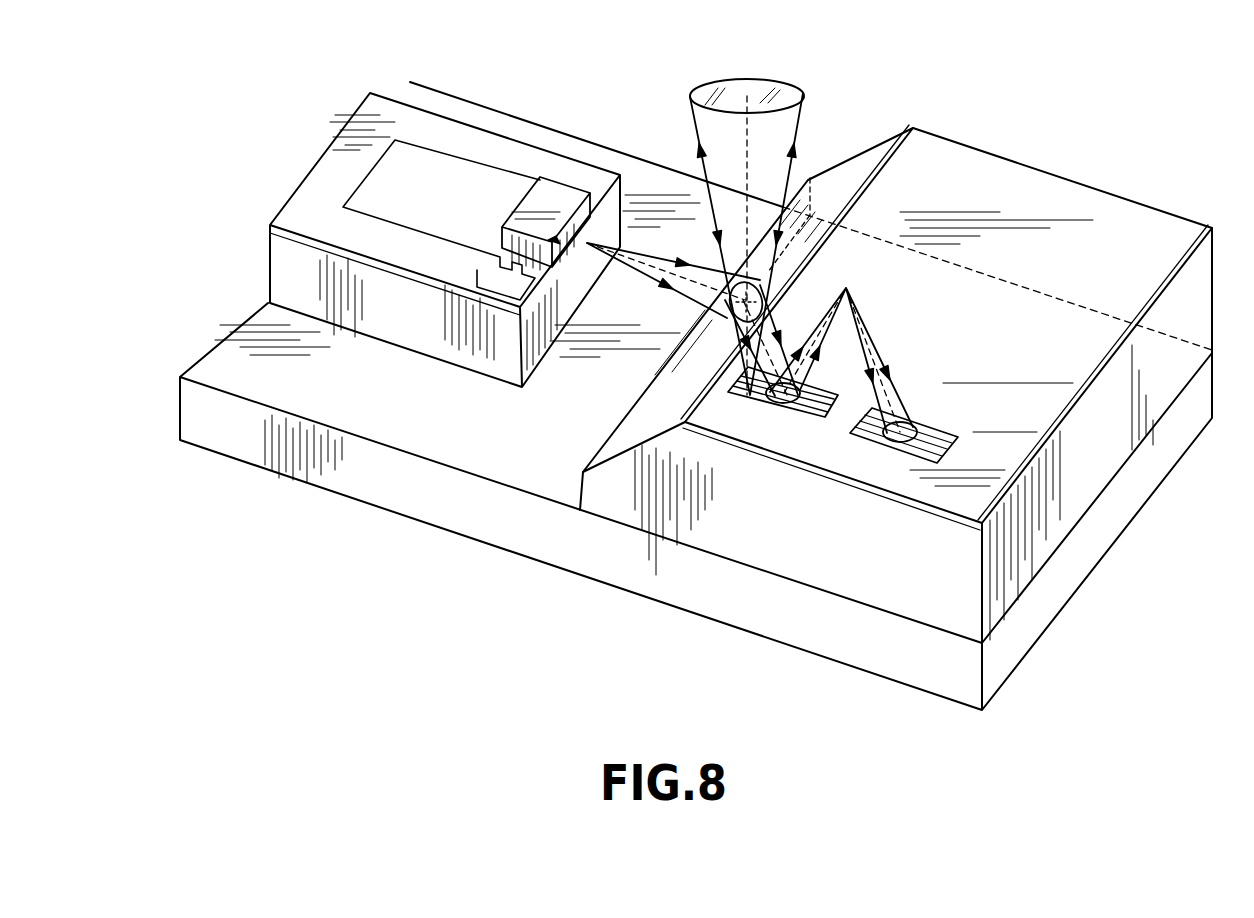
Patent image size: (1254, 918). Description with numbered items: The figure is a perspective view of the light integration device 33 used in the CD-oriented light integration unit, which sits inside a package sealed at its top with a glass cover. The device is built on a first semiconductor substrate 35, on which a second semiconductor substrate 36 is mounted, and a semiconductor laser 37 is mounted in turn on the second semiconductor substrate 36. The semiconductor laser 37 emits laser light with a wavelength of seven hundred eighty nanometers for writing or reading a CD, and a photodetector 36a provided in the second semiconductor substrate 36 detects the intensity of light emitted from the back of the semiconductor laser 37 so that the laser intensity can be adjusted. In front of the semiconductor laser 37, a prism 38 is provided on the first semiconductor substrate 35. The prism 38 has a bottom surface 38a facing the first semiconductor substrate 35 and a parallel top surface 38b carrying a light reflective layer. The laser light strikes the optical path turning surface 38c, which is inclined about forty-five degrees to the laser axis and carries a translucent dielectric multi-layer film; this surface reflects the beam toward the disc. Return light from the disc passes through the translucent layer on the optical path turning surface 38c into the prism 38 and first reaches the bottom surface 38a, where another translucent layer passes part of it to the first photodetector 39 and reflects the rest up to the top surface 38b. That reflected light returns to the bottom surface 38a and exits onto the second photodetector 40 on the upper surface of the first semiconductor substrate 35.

The light integration device 33 is at (975, 107).
The first semiconductor substrate 35 is at (575, 562).
The second semiconductor substrate 36 is at (407, 335).
The photodetector 36a is at (480, 178).
The semiconductor laser 37 is at (562, 195).
The prism 38 is at (810, 573).
The bottom surface 38a is at (1053, 527).
The top surface 38b is at (1097, 202).
The optical path turning surface 38c is at (848, 170).
The first photodetector 39 is at (800, 400).
The second photodetector 40 is at (917, 435).